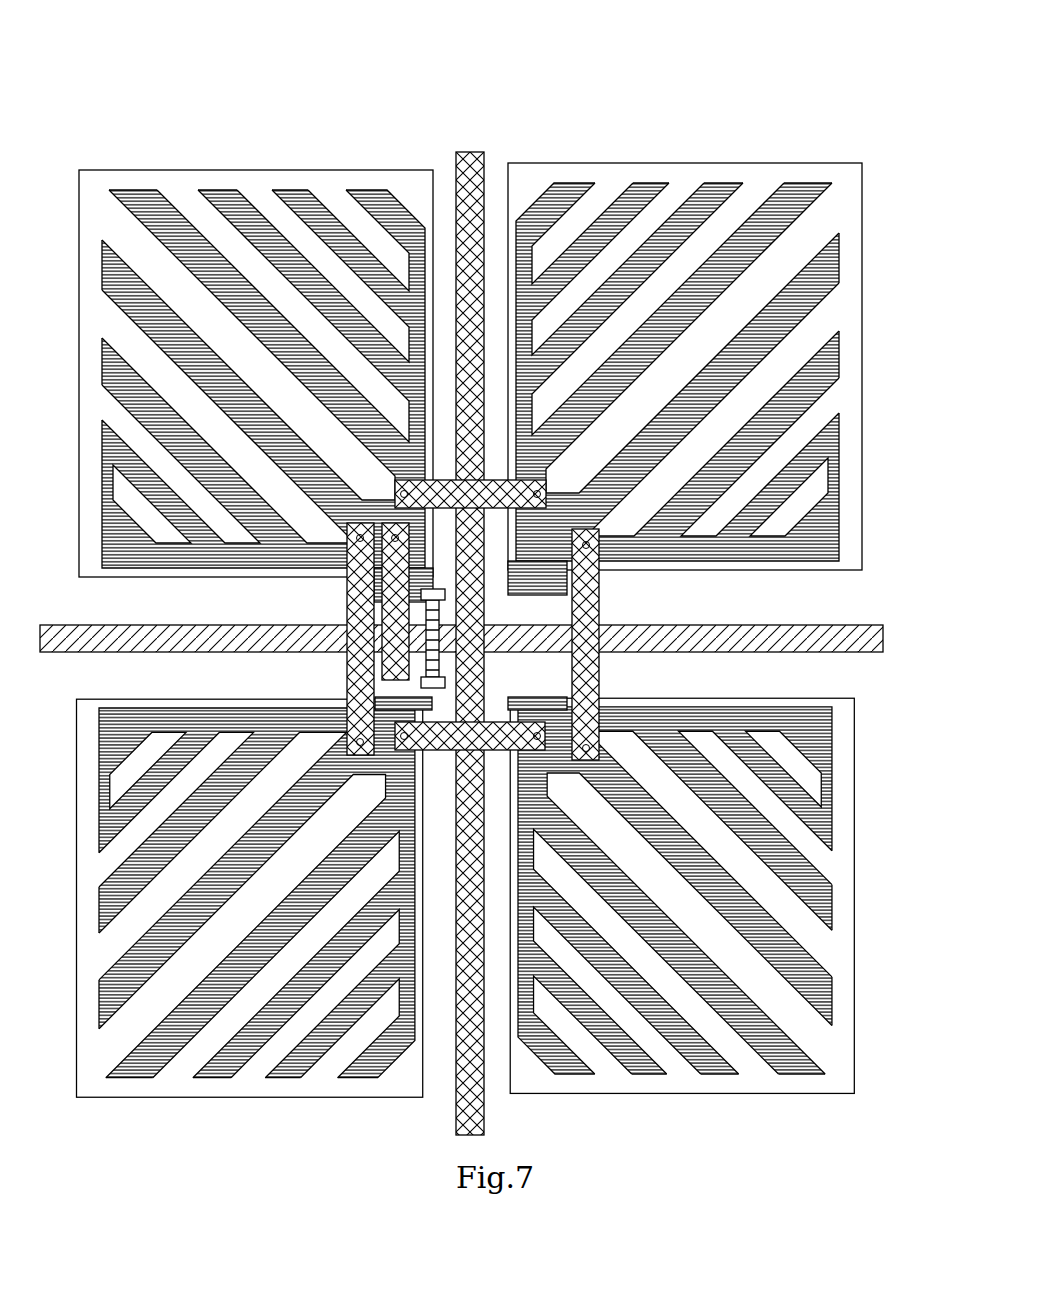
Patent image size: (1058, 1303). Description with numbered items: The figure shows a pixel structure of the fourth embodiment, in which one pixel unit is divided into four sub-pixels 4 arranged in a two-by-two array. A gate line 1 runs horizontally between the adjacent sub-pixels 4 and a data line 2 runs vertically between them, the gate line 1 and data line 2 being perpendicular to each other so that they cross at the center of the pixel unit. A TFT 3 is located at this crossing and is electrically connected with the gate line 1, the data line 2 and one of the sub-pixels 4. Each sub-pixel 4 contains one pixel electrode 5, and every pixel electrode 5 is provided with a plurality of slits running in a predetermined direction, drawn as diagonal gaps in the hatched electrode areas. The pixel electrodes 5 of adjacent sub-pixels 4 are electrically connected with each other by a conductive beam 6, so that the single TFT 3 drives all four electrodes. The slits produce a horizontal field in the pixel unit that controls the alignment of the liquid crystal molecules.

The gate line 1 is at (492, 562).
The data line 2 is at (515, 575).
The TFT 3 is at (599, 385).
The sub-pixel 4 is at (256, 309).
The pixel electrode 5 is at (725, 362).
The conductive beam 6 is at (752, 387).